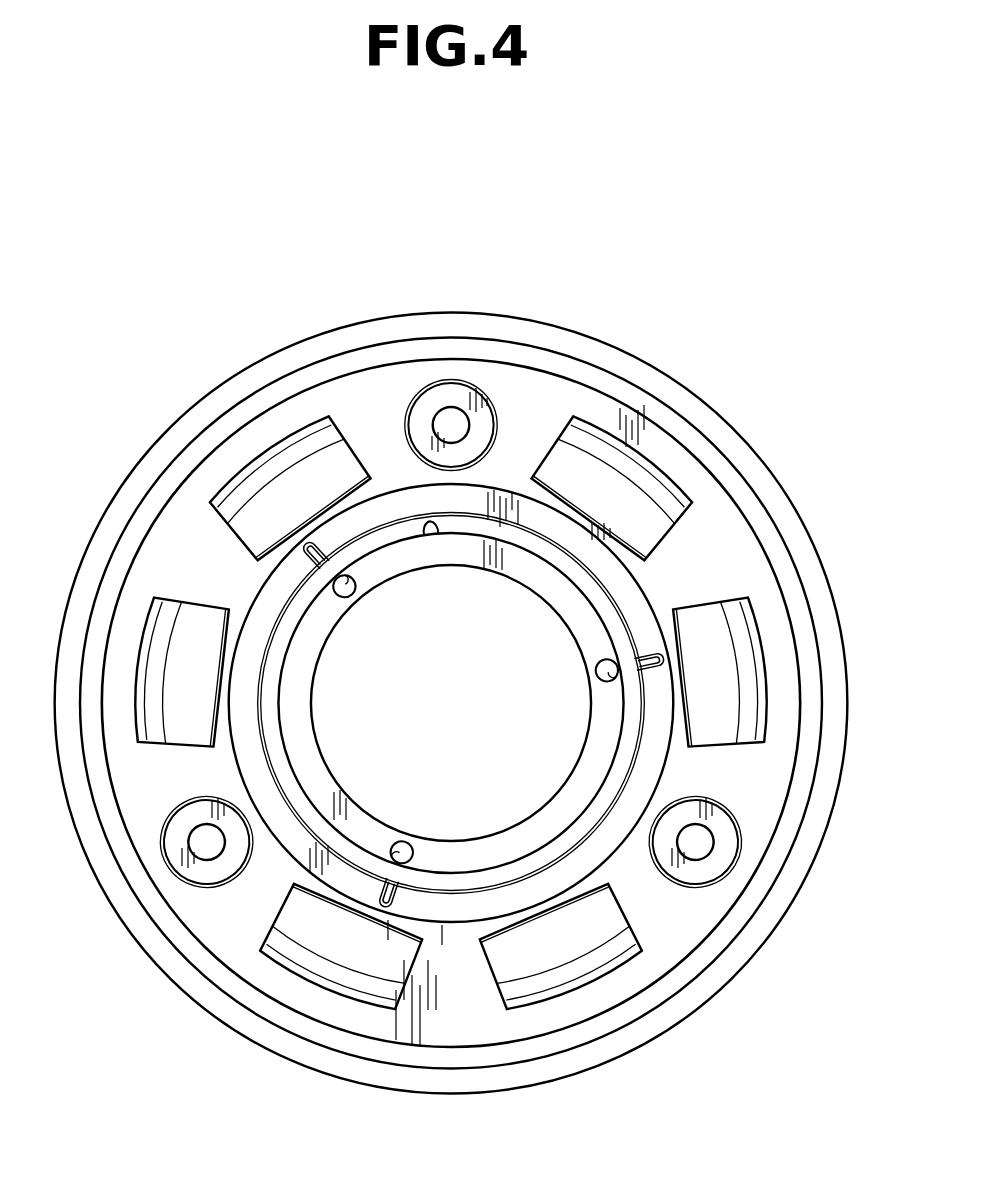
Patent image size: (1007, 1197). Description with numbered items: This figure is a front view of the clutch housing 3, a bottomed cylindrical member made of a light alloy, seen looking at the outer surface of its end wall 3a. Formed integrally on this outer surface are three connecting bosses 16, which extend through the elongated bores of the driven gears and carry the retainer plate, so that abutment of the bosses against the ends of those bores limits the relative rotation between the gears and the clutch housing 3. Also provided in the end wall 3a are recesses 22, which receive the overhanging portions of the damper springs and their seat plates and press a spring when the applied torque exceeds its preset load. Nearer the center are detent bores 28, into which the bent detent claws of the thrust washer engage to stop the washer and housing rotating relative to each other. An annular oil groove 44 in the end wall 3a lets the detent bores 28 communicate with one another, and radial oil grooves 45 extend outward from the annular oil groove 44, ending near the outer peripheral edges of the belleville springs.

The clutch housing 3 is at (628, 338).
The end wall 3a is at (530, 392).
The connecting bosses 16 is at (447, 420).
The recesses 22 is at (272, 450).
The detent bores 28 is at (348, 594).
The annular oil groove 44 is at (437, 534).
The radial oil grooves 45 is at (300, 553).